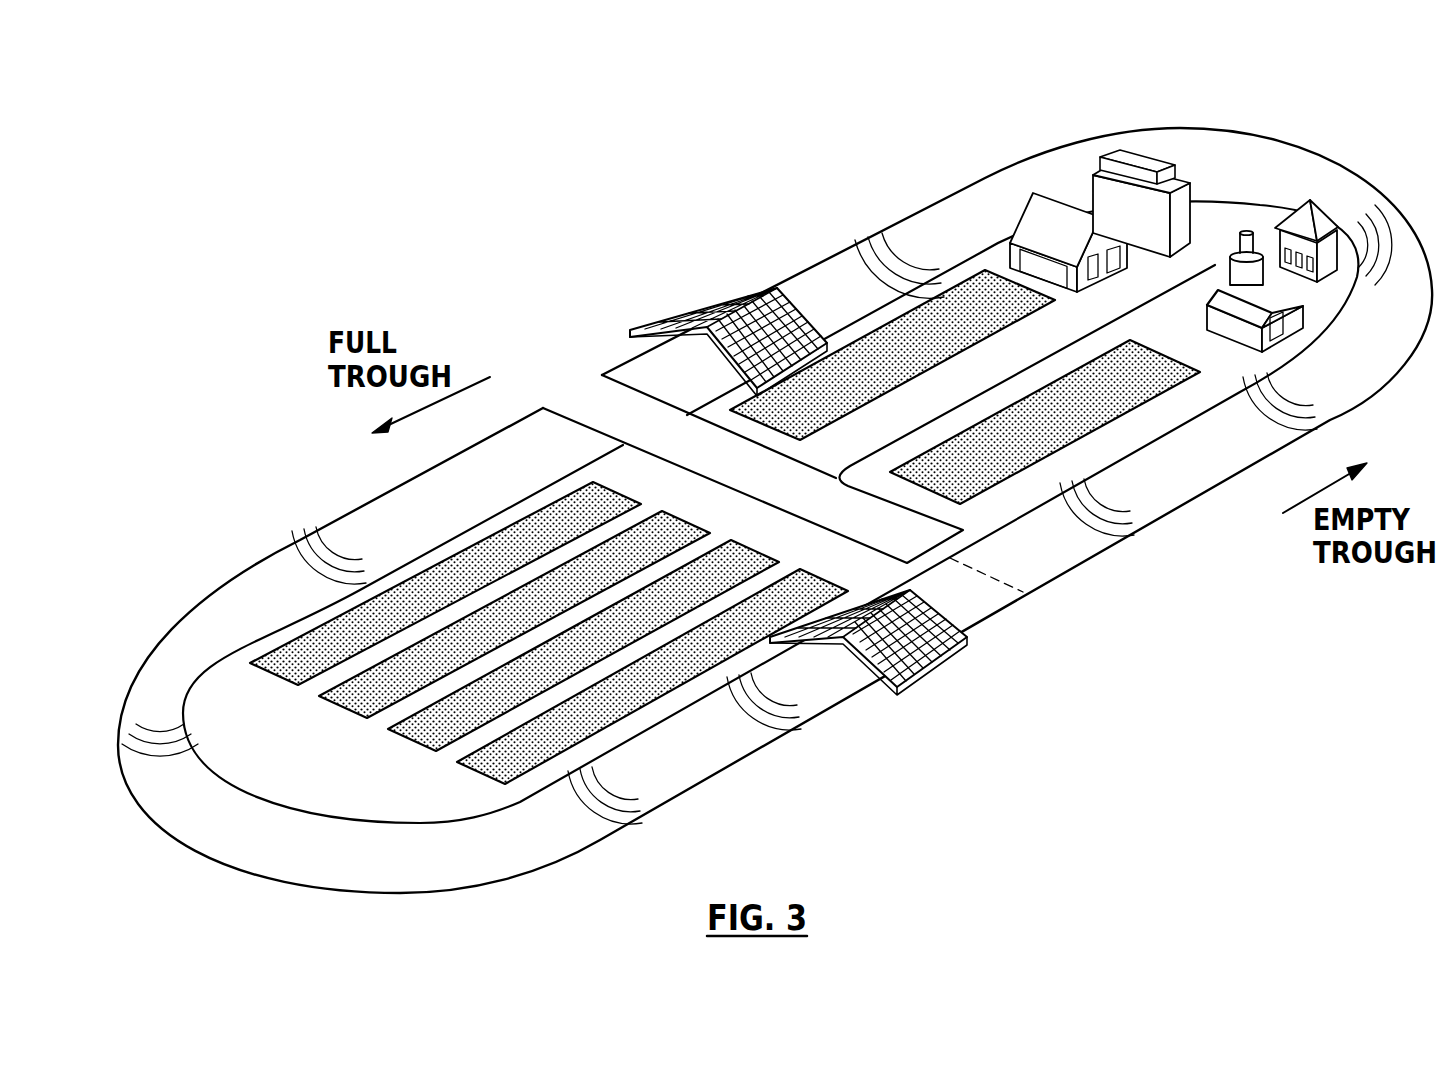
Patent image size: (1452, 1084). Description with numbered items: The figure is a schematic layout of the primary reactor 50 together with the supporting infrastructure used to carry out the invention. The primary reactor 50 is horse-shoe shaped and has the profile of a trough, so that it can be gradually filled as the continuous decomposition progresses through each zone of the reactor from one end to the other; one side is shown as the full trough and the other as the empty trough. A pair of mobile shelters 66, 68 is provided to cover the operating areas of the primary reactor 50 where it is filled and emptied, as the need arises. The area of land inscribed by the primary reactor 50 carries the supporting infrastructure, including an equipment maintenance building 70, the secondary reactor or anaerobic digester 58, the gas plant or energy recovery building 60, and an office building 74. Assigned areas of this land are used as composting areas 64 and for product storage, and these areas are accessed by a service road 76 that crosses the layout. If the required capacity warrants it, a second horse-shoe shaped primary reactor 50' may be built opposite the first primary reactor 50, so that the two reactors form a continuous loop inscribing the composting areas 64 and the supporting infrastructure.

The primary reactor 50 is at (775, 490).
The second primary reactor 50' is at (795, 691).
The secondary reactor or anaerobic digester 58 is at (1155, 203).
The gas plant or energy recovery building 60 is at (1283, 323).
The composting areas 64 is at (390, 608).
The mobile shelter 66 is at (722, 297).
The mobile shelter 68 is at (913, 657).
The equipment maintenance building 70 is at (1030, 223).
The office building 74 is at (1330, 212).
The service road 76 is at (795, 480).